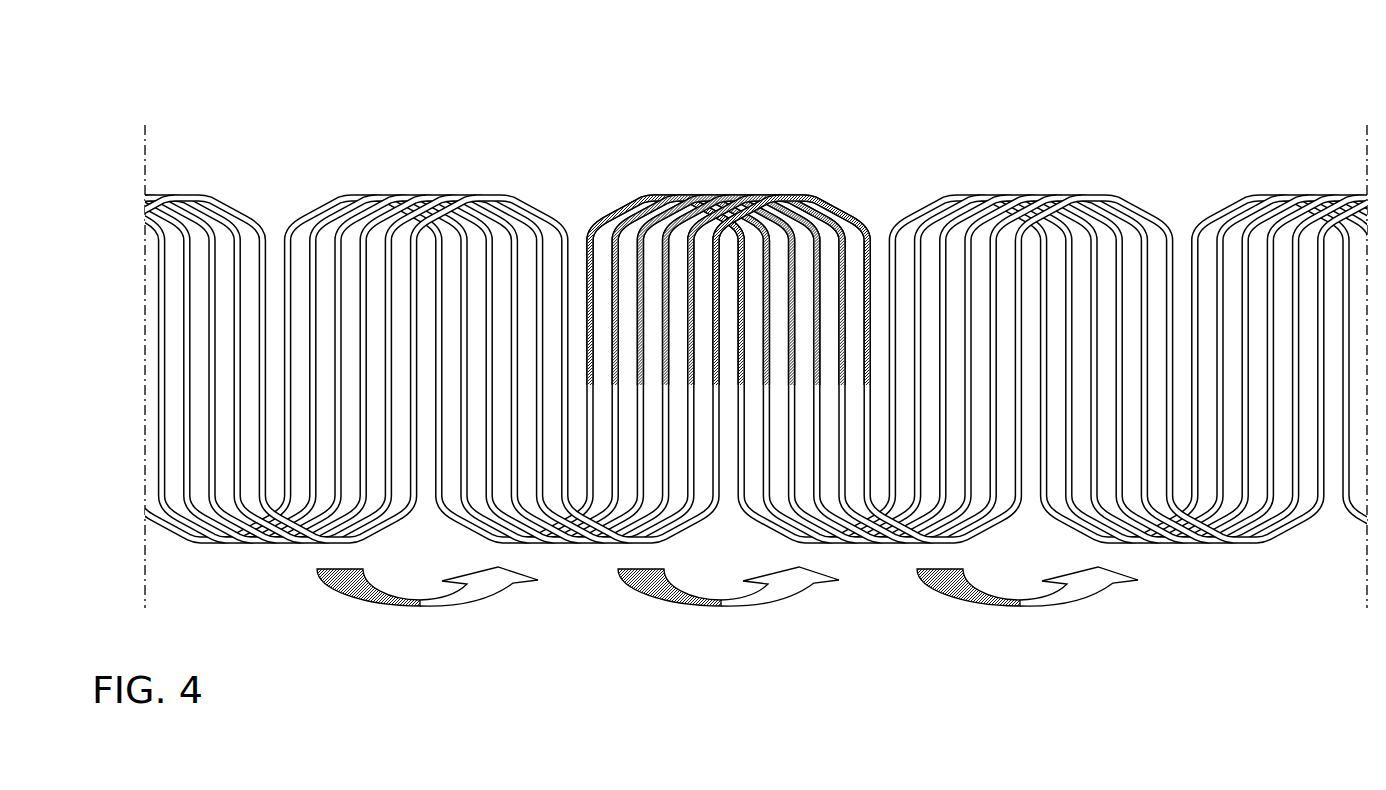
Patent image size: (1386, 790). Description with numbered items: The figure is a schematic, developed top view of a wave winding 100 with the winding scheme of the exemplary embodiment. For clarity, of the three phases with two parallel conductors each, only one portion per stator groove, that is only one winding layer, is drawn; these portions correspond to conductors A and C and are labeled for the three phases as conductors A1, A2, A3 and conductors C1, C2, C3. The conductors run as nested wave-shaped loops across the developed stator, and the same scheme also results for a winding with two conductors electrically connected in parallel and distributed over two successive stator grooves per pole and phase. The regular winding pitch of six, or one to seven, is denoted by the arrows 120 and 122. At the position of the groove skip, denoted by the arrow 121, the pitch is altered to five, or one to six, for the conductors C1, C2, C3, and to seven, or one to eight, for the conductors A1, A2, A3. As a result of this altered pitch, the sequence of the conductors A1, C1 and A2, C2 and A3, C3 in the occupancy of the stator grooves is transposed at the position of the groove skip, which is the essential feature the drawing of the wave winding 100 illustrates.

The wave winding 100 is at (200, 103).
The conductor A1 is at (605, 218).
The conductor C1 is at (638, 215).
The conductor C2 is at (737, 200).
The conductor A2 is at (758, 200).
The conductor C3 is at (803, 208).
The conductor A3 is at (831, 209).
The arrow 120 is at (427, 612).
The arrow 121 is at (728, 612).
The arrow 122 is at (1027, 612).